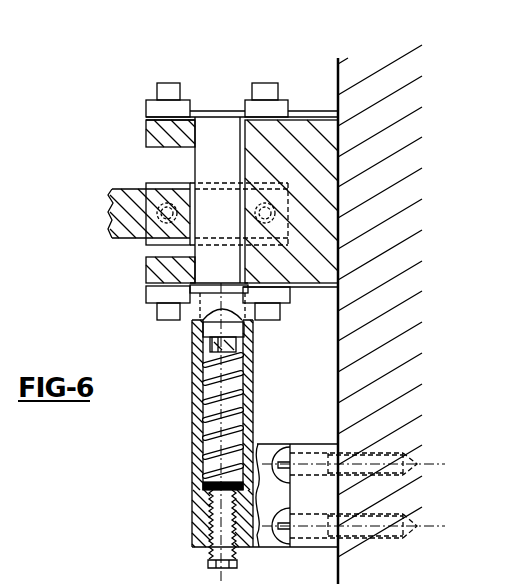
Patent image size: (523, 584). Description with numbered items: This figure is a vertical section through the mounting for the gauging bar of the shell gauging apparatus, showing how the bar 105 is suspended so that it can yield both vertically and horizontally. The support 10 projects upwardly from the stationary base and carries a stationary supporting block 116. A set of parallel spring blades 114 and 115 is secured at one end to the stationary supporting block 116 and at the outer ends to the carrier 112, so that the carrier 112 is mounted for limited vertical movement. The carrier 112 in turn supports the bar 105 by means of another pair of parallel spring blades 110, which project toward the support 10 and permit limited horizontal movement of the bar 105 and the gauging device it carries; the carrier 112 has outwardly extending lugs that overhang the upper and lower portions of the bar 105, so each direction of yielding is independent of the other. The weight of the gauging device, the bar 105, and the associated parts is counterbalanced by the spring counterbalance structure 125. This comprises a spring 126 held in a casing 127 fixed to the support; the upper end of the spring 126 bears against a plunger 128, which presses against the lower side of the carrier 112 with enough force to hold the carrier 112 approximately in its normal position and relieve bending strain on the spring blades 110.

The support 10 is at (400, 91).
The bar 105 is at (128, 189).
The parallel spring blades 110 is at (218, 182).
The carrier 112 is at (150, 228).
The spring blade 114 is at (218, 110).
The spring blade 115 is at (150, 258).
The stationary supporting block 116 is at (317, 207).
The spring counterbalance structure 125 is at (193, 467).
The spring 126 is at (240, 392).
The casing 127 is at (256, 402).
The plunger 128 is at (256, 318).